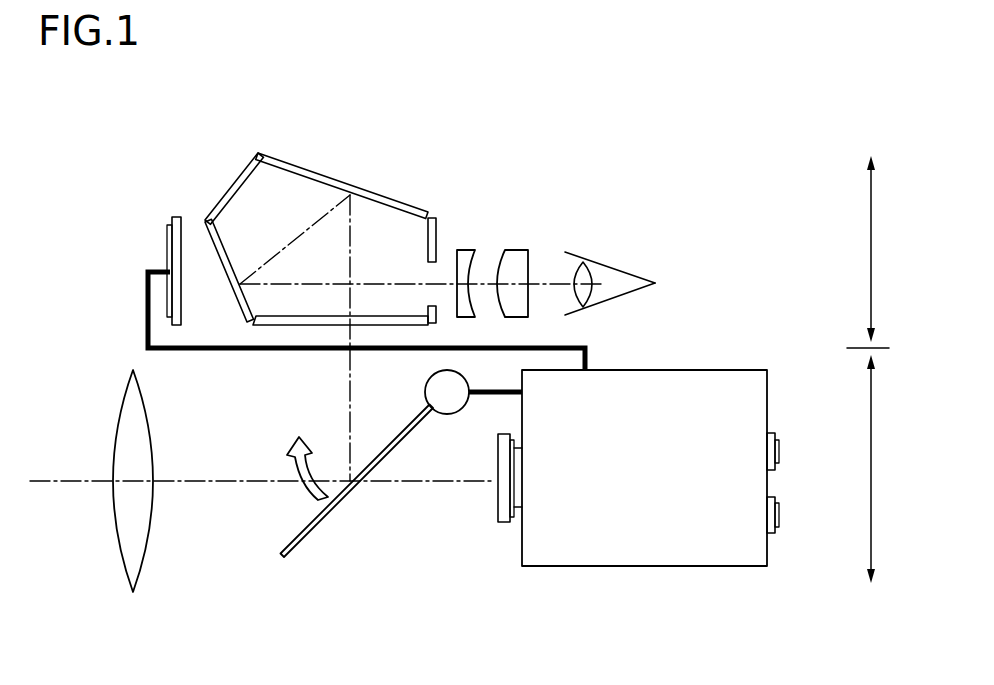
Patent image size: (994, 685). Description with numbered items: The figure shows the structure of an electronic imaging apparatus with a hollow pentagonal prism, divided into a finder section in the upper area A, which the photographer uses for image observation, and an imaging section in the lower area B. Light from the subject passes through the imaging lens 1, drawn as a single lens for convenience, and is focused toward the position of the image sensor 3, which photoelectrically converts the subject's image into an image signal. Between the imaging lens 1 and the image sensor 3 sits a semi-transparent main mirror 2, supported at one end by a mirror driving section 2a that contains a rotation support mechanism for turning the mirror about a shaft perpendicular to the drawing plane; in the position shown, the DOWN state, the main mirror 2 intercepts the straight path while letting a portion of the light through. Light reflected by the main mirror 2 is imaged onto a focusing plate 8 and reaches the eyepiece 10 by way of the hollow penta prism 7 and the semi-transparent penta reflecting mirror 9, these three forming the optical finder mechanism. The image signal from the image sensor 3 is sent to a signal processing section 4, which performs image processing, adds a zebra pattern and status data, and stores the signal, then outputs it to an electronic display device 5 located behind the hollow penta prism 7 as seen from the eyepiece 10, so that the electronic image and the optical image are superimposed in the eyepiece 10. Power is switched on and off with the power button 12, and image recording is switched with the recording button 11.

The imaging lens 1 is at (140, 557).
The main mirror 2 is at (313, 525).
The mirror driving section 2a is at (447, 407).
The image sensor 3 is at (498, 523).
The signal processing section 4 is at (660, 548).
The electronic display device 5 is at (175, 243).
The hollow penta prism 7 is at (390, 202).
The focusing plate 8 is at (420, 323).
The semi-transparent penta reflecting mirror 9 is at (235, 292).
The eyepiece 10 is at (518, 257).
The recording button 11 is at (778, 459).
The power button 12 is at (780, 526).
The upper area (finder section) A is at (876, 252).
The lower area (imaging section) B is at (886, 469).